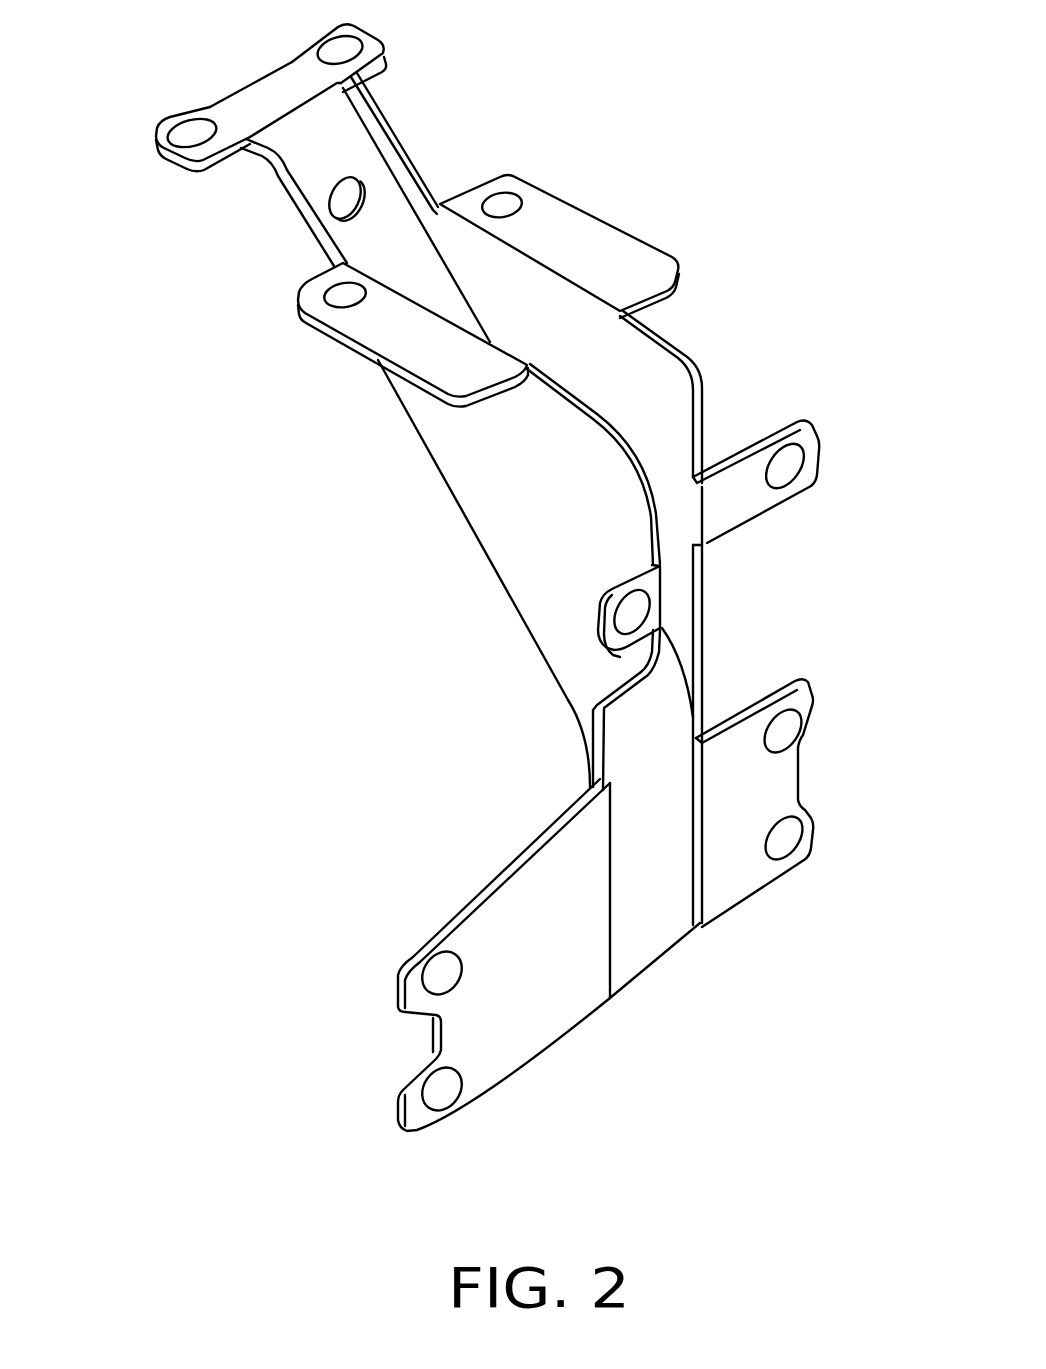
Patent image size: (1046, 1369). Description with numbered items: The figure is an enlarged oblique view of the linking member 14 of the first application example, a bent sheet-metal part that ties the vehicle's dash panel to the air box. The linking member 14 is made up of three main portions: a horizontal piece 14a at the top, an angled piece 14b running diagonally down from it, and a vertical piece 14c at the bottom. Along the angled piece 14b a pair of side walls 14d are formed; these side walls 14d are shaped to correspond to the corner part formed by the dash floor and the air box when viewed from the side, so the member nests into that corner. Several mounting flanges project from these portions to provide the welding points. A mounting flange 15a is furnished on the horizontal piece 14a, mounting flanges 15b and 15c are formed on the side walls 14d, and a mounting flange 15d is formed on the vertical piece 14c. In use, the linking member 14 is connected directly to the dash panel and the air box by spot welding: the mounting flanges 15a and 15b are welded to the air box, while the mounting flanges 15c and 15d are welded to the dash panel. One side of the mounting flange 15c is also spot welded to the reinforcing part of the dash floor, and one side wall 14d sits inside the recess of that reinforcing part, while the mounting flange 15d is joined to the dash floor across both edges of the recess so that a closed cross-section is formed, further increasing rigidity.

The linking member 14 is at (550, 129).
The horizontal piece 14a is at (270, 80).
The angled piece 14b is at (304, 178).
The vertical piece 14c is at (664, 937).
The side walls 14d is at (703, 384).
The mounting flange 15a is at (333, 32).
The mounting flange 15b is at (592, 235).
The mounting flange 15c is at (742, 476).
The mounting flange 15d is at (738, 738).